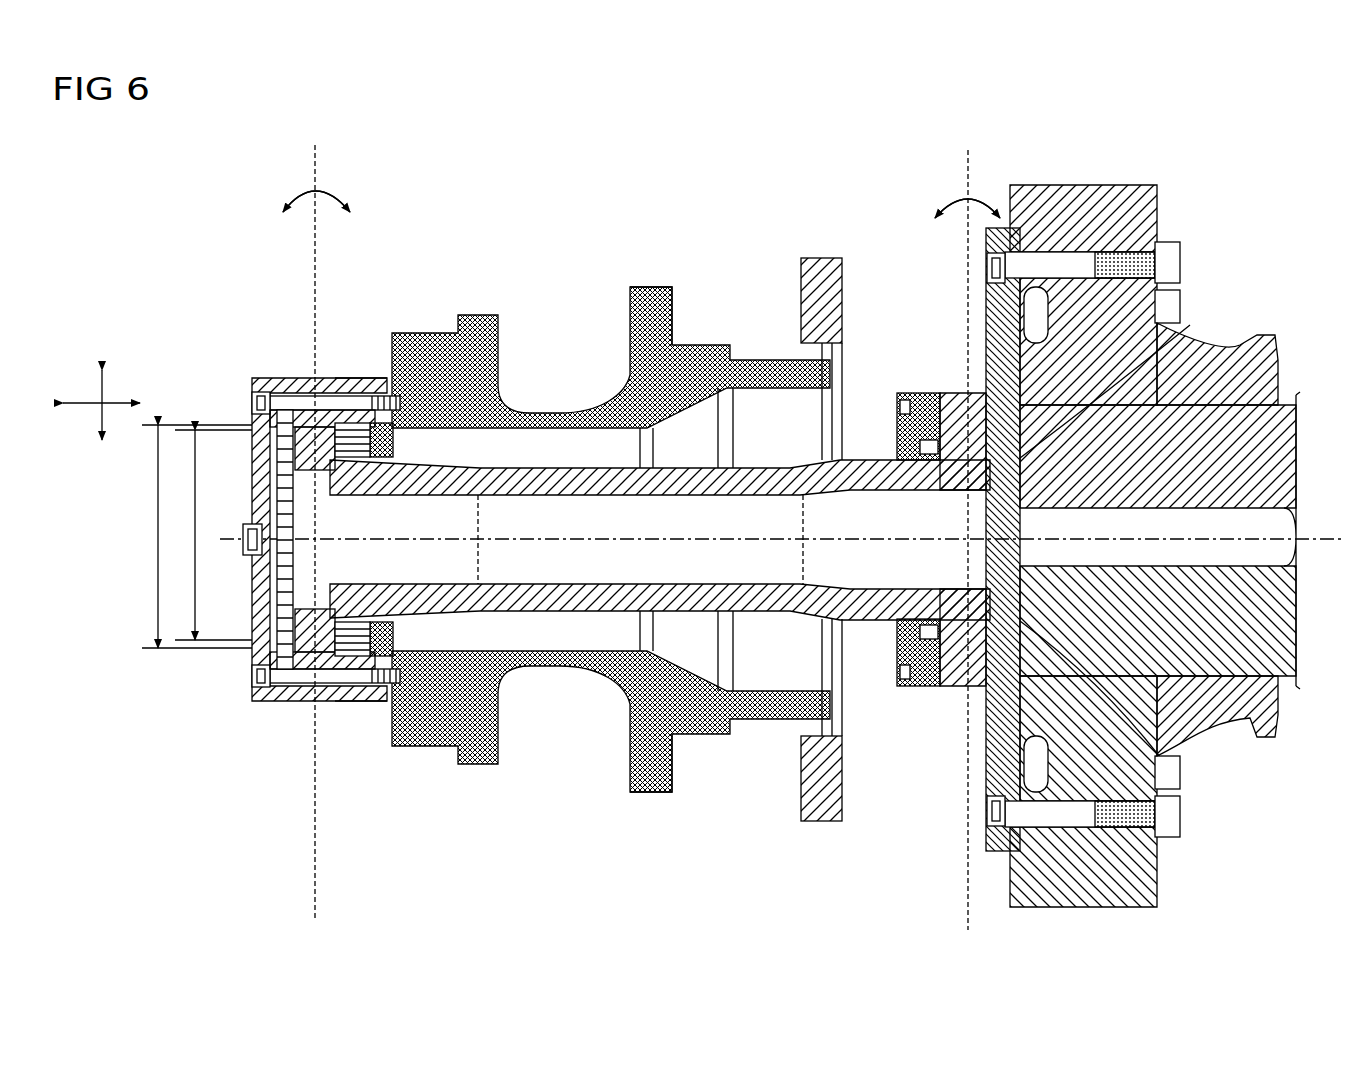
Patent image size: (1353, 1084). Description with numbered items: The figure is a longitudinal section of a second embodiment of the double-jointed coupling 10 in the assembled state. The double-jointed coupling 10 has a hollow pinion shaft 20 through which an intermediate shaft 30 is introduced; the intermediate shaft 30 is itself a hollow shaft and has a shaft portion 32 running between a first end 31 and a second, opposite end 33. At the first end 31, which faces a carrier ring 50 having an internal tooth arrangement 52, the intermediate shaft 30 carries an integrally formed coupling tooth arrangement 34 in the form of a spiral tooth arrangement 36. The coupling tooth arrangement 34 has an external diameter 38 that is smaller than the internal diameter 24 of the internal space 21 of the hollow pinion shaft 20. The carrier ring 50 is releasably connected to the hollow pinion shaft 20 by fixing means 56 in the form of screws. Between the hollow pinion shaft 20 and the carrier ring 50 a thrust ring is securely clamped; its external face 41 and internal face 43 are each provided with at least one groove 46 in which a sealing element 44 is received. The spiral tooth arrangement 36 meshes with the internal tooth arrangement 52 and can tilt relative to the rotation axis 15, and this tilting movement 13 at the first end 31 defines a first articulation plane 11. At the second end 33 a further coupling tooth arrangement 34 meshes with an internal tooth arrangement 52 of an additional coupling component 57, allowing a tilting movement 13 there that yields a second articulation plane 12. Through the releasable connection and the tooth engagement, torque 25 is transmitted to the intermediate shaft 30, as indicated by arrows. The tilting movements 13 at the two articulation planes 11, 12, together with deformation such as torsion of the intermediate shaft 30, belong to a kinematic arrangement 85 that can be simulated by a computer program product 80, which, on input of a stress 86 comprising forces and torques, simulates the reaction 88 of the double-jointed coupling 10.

The double-jointed coupling 10 is at (200, 242).
The first articulation plane 11 is at (315, 155).
The second articulation plane 12 is at (970, 182).
The tilting movement 13 is at (641, 535).
The kinematic arrangement 85 is at (320, 182).
The rotation axis 15 is at (1298, 577).
The computer program product 80 is at (530, 287).
The hollow pinion shaft 20 is at (652, 298).
The internal space 21 is at (555, 447).
The torque 25 is at (822, 196).
The additional coupling component 57 is at (988, 305).
The internal tooth arrangement 52 is at (930, 400).
The second end 33 is at (1190, 325).
The coupling tooth arrangement 34 is at (601, 506).
The spiral tooth arrangement 36 is at (925, 765).
The carrier ring 50 is at (257, 378).
The fixing means 56 is at (257, 394).
The stress 86 is at (103, 348).
The reaction 88 is at (142, 380).
The first end 31 is at (262, 432).
The external diameter 38 is at (195, 507).
The internal diameter 24 is at (158, 585).
The intermediate shaft 30 is at (660, 613).
The shaft portion 32 is at (575, 600).
The internal face 43 is at (291, 632).
The sealing element 44 is at (291, 632).
The groove 46 is at (375, 470).
The external face 41 is at (382, 700).